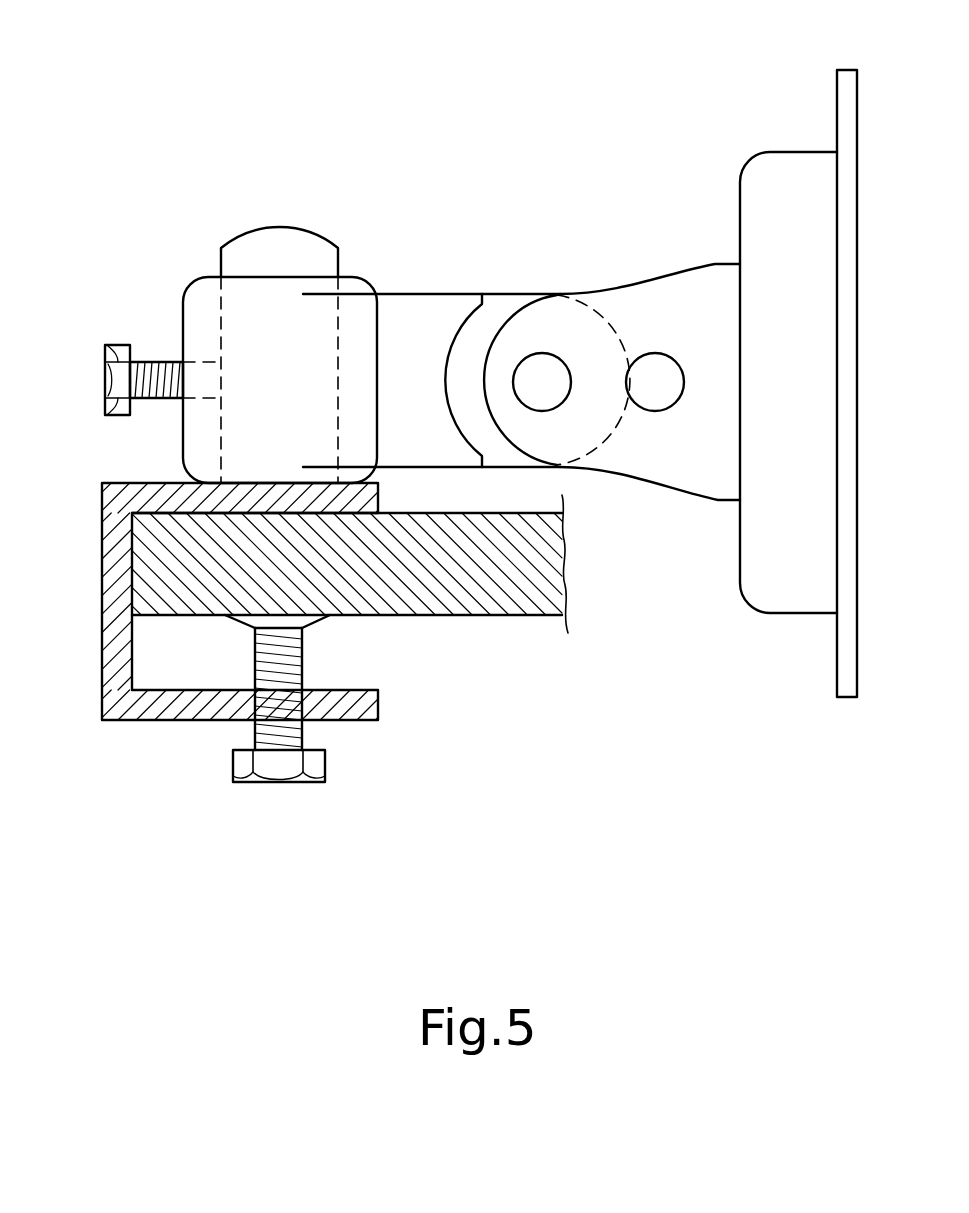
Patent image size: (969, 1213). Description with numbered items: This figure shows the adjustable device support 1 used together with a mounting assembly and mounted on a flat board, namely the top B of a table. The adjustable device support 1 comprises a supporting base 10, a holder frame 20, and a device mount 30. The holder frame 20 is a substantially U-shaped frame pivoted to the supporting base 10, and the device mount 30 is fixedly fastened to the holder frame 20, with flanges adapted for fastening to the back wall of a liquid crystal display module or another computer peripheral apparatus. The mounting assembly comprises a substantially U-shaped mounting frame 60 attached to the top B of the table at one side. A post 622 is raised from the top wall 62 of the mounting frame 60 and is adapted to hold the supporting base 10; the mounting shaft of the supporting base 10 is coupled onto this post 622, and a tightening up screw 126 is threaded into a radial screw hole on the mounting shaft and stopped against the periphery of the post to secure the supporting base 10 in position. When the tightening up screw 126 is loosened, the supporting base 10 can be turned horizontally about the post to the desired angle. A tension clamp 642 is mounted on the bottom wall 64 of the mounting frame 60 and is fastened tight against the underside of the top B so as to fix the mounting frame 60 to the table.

The adjustable device support 1 is at (547, 178).
The supporting base 10 is at (430, 280).
The holder frame 20 is at (657, 277).
The device mount 30 is at (817, 322).
The top wall 62 is at (128, 483).
The post 622 is at (278, 233).
The tightening up screw 126 is at (117, 352).
The mounting frame 60 is at (123, 720).
The bottom wall 64 is at (373, 705).
The tension clamp 642 is at (277, 770).
The top of a table B is at (528, 603).